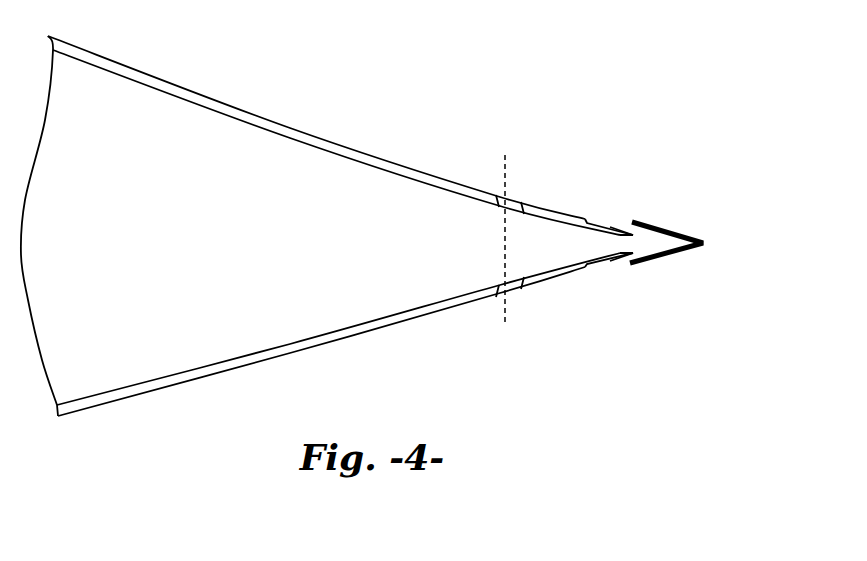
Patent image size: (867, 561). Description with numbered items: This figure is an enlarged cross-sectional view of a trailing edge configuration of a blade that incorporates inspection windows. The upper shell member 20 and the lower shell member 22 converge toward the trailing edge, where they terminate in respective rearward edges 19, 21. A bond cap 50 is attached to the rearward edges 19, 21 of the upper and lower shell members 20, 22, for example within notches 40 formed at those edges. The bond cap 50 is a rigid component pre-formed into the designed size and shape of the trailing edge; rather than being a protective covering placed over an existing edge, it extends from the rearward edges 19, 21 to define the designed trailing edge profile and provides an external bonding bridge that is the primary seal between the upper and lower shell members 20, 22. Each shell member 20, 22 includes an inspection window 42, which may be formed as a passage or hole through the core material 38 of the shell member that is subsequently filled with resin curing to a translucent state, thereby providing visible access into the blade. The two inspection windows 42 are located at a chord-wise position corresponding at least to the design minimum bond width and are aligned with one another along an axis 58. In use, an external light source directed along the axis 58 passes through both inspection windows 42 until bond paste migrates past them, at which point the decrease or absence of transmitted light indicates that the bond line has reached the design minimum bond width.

The rearward edge 19 is at (623, 235).
The upper shell member 20 is at (288, 126).
The rearward edge 21 is at (623, 258).
The lower shell member 22 is at (288, 353).
The core material 38 is at (470, 195).
The notch 40 is at (595, 226).
The inspection window 42 is at (519, 187).
The bond cap 50 is at (688, 232).
The axis 58 is at (503, 262).